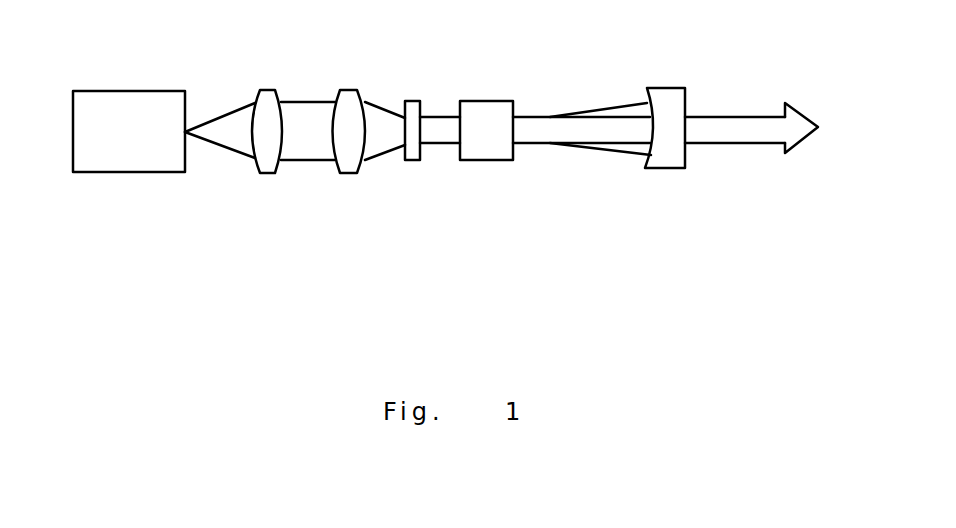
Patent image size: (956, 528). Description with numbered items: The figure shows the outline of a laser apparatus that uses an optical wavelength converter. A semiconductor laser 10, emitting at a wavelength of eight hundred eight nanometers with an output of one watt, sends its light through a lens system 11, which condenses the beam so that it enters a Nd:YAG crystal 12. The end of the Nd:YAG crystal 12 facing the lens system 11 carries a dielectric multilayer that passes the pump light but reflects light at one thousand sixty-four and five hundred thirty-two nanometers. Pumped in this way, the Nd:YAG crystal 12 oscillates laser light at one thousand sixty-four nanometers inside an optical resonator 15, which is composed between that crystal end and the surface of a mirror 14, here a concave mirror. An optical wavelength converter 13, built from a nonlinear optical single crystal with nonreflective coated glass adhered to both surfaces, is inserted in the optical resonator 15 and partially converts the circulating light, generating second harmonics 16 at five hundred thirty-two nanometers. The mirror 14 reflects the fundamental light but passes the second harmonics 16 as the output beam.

The semiconductor laser 10 is at (135, 172).
The lens system 11 is at (355, 195).
The Nd:YAG crystal 12 is at (410, 160).
The optical wavelength converter 13 is at (487, 160).
The mirror 14 is at (663, 153).
The optical resonator 15 is at (647, 88).
The second harmonics 16 is at (797, 147).